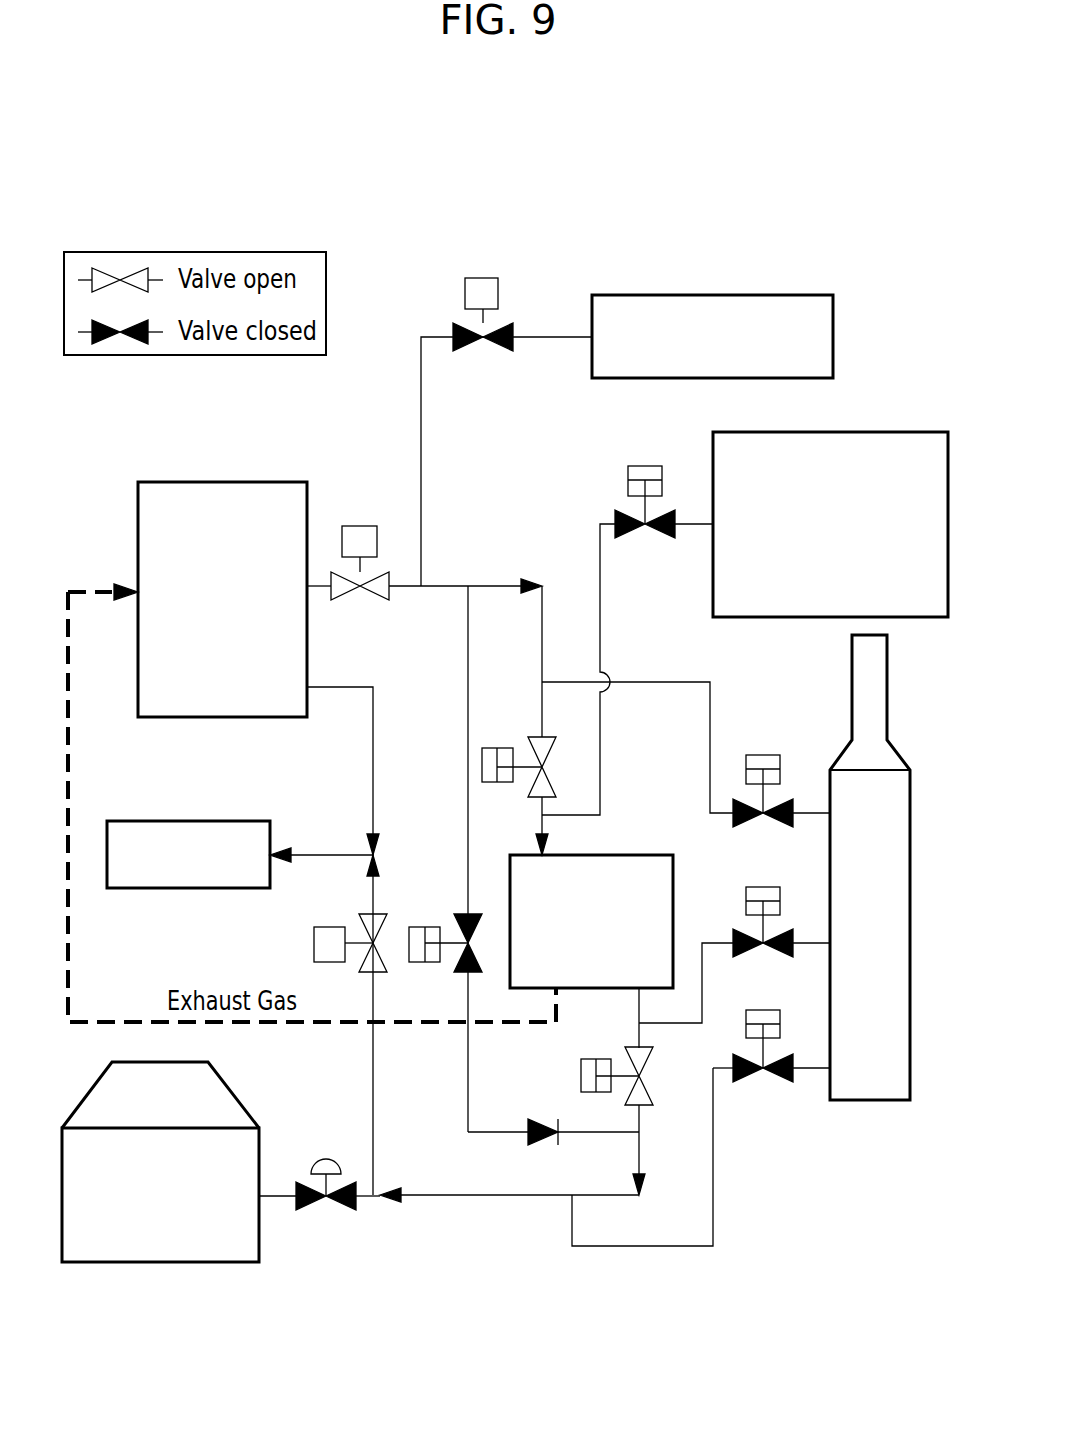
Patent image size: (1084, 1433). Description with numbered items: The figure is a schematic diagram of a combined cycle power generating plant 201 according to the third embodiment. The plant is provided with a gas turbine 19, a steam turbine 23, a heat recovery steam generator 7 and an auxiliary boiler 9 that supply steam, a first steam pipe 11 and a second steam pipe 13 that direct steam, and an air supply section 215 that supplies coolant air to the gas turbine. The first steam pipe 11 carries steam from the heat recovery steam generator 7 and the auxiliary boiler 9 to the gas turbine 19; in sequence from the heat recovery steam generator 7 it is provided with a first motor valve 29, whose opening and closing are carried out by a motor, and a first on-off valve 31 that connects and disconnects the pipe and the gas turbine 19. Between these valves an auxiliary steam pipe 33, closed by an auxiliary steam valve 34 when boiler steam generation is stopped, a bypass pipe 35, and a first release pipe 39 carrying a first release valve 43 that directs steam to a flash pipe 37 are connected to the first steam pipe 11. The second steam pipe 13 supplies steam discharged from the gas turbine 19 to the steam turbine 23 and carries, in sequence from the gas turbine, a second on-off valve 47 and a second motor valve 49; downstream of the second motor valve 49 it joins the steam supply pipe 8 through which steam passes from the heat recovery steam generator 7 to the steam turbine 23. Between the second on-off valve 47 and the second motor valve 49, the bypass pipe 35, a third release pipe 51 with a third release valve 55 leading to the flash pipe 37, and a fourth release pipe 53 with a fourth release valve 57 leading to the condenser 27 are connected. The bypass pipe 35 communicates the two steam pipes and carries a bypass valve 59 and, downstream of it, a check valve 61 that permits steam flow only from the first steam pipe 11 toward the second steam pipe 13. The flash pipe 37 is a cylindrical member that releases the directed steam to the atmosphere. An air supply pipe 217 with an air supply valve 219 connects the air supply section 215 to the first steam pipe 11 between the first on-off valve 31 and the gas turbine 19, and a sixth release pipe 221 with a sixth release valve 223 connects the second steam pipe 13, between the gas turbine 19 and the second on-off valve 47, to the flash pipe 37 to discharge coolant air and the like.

The combined cycle power generating plant 201 is at (822, 110).
The heat recovery steam generator 7 is at (220, 482).
The steam supply pipe 8 is at (373, 766).
The auxiliary boiler 9 is at (700, 295).
The first steam pipe 11 is at (486, 585).
The second steam pipe 13 is at (452, 1196).
The gas turbine 19 is at (628, 855).
The steam turbine 23 is at (140, 821).
The condenser 27 is at (165, 1263).
The first motor valve 29 is at (360, 526).
The first on-off valve 31 is at (490, 748).
The auxiliary steam pipe 33 is at (545, 337).
The auxiliary steam valve 34 is at (483, 278).
The bypass pipe 35 is at (468, 646).
The flash pipe 37 is at (873, 1100).
The first release pipe 39 is at (668, 682).
The first release valve 43 is at (763, 755).
The second on-off valve 47 is at (581, 1076).
The second motor valve 49 is at (314, 943).
The third release pipe 51 is at (652, 1246).
The fourth release pipe 53 is at (282, 1198).
The third release valve 55 is at (752, 1083).
The fourth release valve 57 is at (326, 1159).
The bypass valve 59 is at (420, 927).
The check valve 61 is at (530, 1136).
The air supply section 215 is at (900, 432).
The air supply pipe 217 is at (600, 548).
The air supply valve 219 is at (645, 466).
The sixth release pipe 221 is at (680, 1023).
The sixth release valve 223 is at (760, 887).